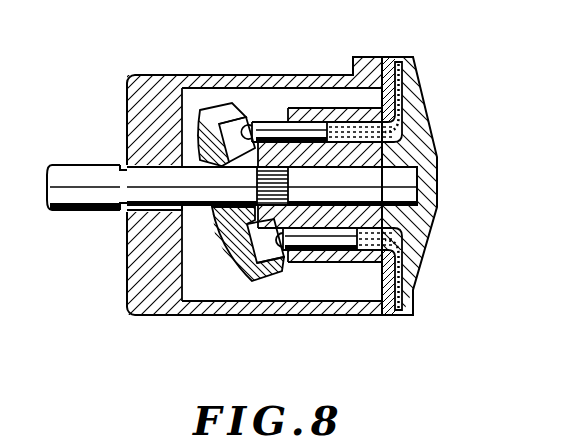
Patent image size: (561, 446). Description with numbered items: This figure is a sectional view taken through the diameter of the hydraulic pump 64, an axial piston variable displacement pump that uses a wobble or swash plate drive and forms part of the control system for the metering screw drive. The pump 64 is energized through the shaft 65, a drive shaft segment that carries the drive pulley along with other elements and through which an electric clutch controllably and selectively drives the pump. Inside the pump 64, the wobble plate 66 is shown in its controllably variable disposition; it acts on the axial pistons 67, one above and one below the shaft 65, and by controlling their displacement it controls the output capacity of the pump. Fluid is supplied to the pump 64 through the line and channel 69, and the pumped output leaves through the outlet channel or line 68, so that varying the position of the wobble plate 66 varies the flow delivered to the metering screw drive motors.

The hydraulic pump 64 is at (331, 75).
The shaft 65 is at (75, 165).
The wobble plate 66 is at (213, 107).
The pistons 67 is at (278, 121).
The outlet channel 68 is at (404, 293).
The line and channel 69 is at (404, 78).